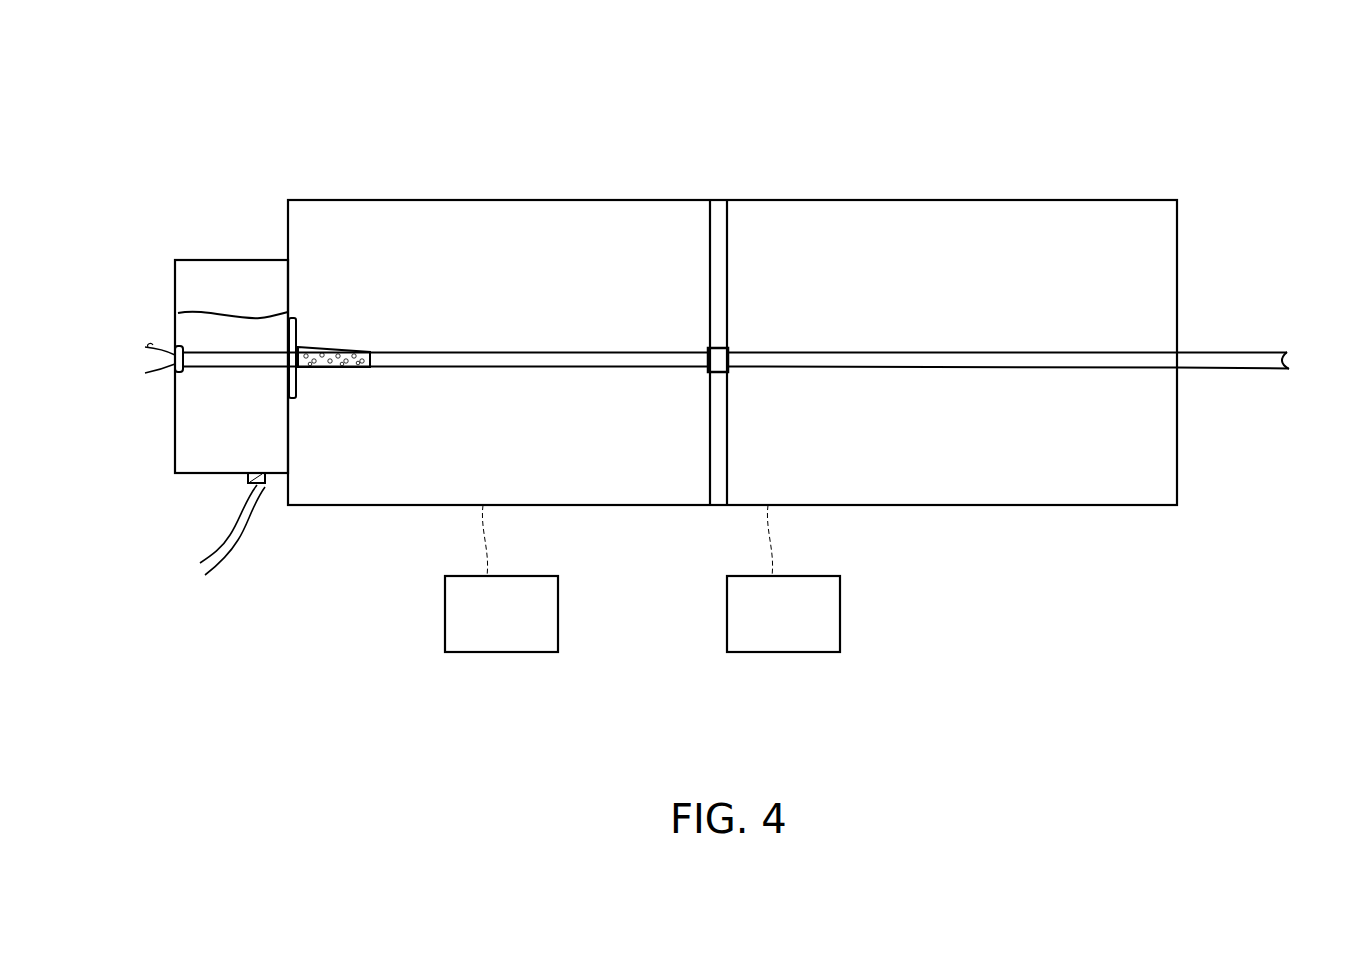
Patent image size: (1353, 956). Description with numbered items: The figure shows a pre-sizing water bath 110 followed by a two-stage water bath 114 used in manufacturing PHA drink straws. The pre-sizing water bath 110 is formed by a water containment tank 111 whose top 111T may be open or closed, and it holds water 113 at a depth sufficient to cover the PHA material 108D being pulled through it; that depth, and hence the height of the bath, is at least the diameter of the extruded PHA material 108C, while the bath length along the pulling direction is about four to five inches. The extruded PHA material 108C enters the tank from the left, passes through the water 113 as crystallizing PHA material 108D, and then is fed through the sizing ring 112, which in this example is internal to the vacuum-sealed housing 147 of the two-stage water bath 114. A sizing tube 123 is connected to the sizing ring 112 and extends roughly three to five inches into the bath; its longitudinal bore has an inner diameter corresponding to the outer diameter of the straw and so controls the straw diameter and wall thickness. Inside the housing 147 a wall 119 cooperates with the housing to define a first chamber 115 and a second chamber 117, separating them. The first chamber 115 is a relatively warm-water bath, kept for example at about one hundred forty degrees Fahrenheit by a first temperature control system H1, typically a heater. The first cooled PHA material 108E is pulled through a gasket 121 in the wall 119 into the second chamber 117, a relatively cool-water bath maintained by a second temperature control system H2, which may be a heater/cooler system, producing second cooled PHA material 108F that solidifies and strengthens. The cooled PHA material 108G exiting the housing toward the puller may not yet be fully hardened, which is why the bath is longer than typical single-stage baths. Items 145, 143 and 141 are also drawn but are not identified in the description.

The housing 147 is at (508, 197).
The two-stage water bath 114 is at (676, 238).
The wall 119 is at (706, 462).
The gasket 121 is at (710, 368).
The first cooled PHA material 108E is at (510, 345).
The second cooled PHA material 108F is at (905, 347).
The cooled PHA material 108G is at (1210, 358).
The crystallizing PHA material 108D is at (175, 340).
The extruded PHA material 108C is at (145, 347).
The fiber connector 145 is at (173, 343).
The water containment tank 111 is at (175, 441).
The top of the tank 111T is at (243, 262).
The water 113 is at (213, 352).
The sizing ring 112 is at (297, 320).
The sizing tube 123 is at (360, 348).
The pre-sizing water bath 110 is at (270, 410).
The cable connector 143 is at (263, 487).
The cable 141 is at (230, 555).
The first temperature control system H1 is at (445, 620).
The second temperature control system H2 is at (725, 620).
The first chamber 115 is at (450, 505).
The second chamber 117 is at (1000, 505).